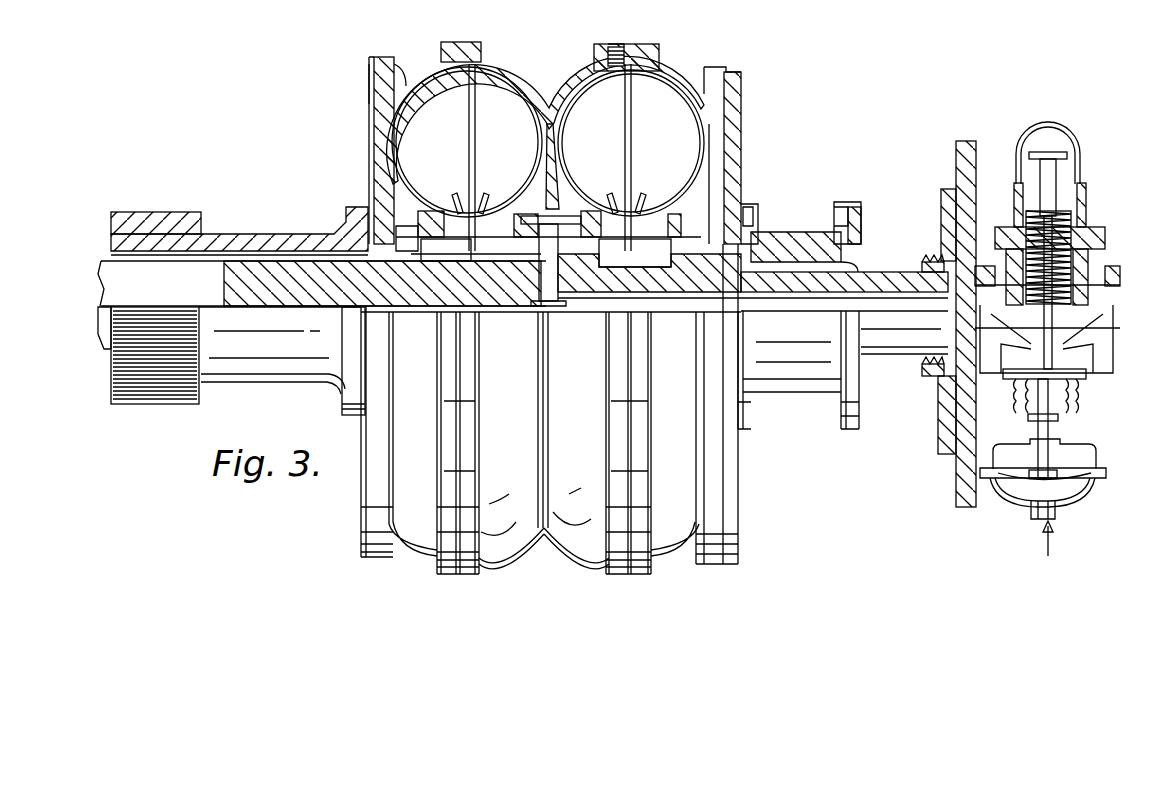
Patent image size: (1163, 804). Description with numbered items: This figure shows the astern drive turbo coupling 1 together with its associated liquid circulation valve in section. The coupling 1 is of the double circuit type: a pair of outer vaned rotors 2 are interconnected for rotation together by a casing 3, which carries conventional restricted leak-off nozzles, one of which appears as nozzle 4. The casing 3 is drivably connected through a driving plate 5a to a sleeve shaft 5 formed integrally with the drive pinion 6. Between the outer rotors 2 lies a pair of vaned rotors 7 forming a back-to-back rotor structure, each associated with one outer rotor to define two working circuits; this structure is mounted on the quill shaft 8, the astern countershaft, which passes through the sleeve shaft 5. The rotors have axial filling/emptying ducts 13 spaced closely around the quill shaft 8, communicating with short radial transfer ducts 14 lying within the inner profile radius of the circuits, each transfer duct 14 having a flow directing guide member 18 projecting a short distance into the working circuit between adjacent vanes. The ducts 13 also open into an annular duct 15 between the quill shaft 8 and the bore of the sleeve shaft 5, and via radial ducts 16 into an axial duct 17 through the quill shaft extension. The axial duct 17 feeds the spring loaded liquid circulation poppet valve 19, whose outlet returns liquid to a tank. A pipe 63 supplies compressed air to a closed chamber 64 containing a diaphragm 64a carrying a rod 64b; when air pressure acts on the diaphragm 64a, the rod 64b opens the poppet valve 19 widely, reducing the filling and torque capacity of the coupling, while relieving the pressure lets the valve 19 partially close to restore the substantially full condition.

The turbo coupling 1 is at (542, 540).
The vaned rotors 2 is at (392, 129).
The casing 3 is at (498, 58).
The restricted leak-off nozzle 4 is at (616, 40).
The sleeve shaft 5 is at (138, 222).
The driving plate 5a is at (367, 88).
The drive pinion 6 is at (150, 393).
The vaned rotors 7 is at (548, 121).
The quill shaft 8 is at (322, 283).
The axial filling/emptying ducts 13 is at (436, 252).
The radial transfer ducts 14 is at (454, 214).
The duct 15 is at (193, 249).
The radial ducts 16 is at (547, 280).
The axial duct 17 is at (745, 300).
The flow directing guide member 18 is at (463, 196).
The spring loaded liquid circulation poppet valve 19 is at (1093, 195).
The pipe 63 is at (1029, 510).
The closed chamber 64 is at (1084, 489).
The diaphragm 64a is at (1059, 462).
The rod 64b is at (1044, 425).